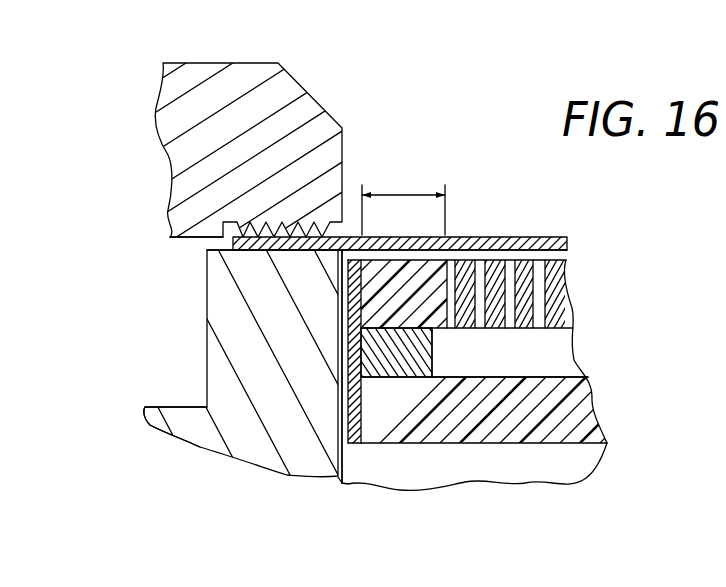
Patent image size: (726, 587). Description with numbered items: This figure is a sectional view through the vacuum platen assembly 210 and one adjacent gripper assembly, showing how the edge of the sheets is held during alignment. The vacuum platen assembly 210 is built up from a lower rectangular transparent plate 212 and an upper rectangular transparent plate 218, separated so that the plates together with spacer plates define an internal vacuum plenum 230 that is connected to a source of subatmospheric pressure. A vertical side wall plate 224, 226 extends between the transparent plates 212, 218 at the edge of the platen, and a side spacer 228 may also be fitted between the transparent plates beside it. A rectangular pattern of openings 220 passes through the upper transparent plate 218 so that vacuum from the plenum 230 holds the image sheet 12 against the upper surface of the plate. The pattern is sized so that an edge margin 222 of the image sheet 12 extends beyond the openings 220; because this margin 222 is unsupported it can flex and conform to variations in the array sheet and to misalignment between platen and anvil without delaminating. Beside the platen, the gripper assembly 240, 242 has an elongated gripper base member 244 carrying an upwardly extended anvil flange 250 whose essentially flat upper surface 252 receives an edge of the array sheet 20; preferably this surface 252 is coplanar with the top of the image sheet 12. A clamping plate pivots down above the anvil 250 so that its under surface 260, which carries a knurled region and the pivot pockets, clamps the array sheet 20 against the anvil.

The image sheet 12 is at (568, 249).
The array sheet 20 is at (510, 237).
The vacuum platen assembly 210 is at (548, 455).
The lower transparent plate 212 is at (467, 437).
The upper transparent plate 218 is at (565, 268).
The openings 220 is at (541, 317).
The edge margin 222 is at (403, 200).
The vertical side wall plate 224 is at (312, 383).
The vertical side wall plate 226 is at (342, 483).
The side spacer 228 is at (418, 381).
The internal vacuum plenum 230 is at (522, 367).
The left gripper assembly 240 is at (324, 157).
The right gripper assembly 242 is at (334, 101).
The gripper base member 244 is at (243, 433).
The anvil flange 250 is at (208, 338).
The upper surface of anvil flange 252 is at (208, 249).
The under surface of clamping plate 260 is at (172, 241).